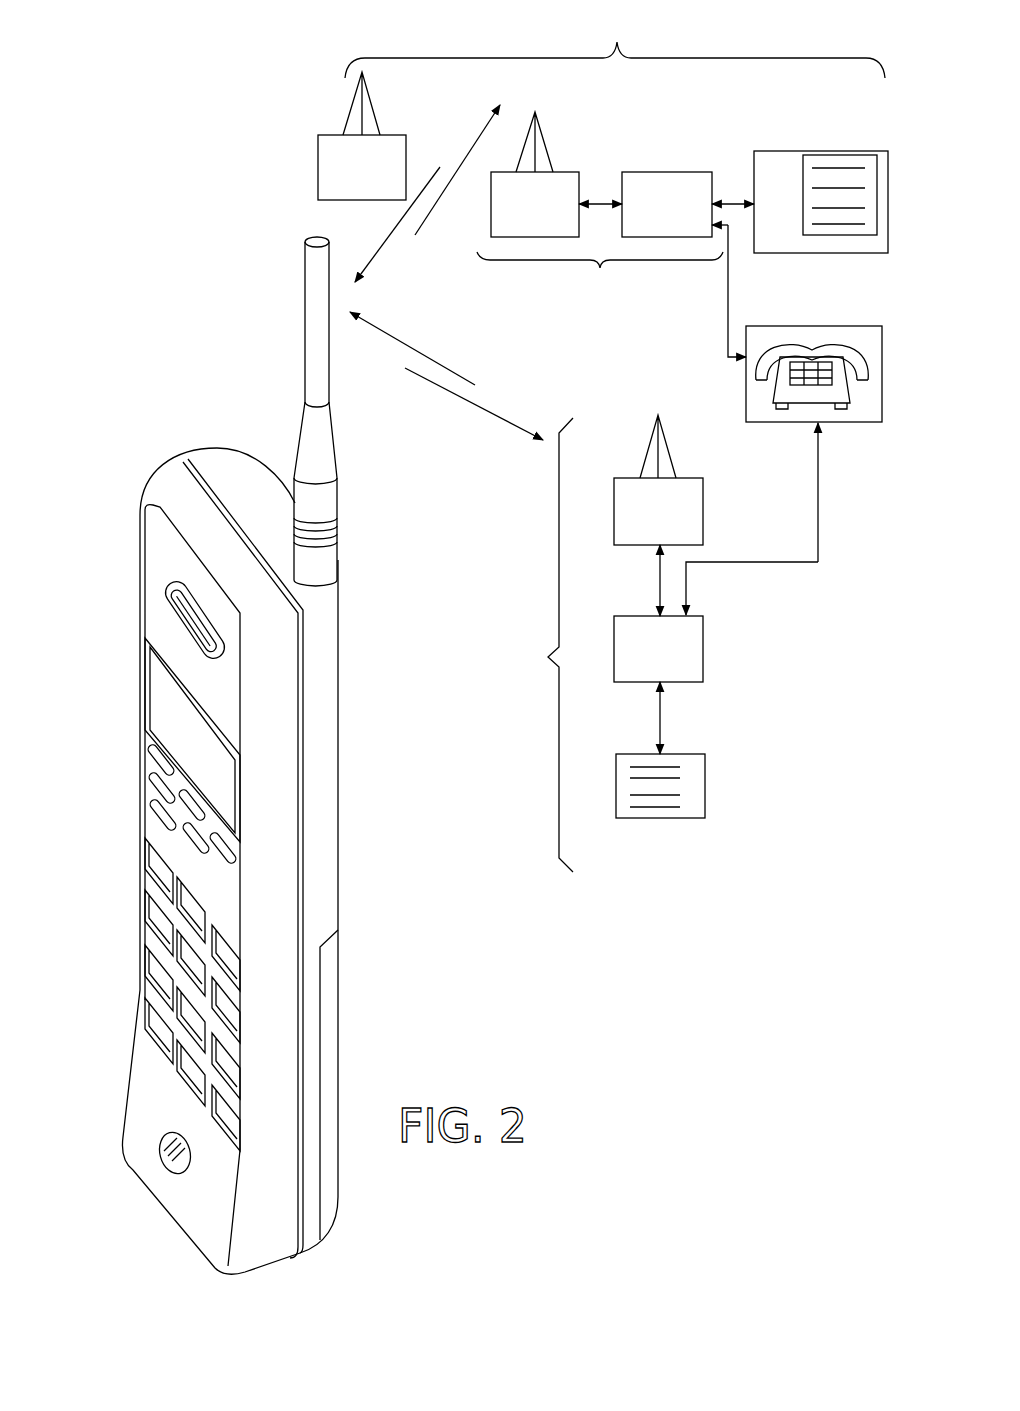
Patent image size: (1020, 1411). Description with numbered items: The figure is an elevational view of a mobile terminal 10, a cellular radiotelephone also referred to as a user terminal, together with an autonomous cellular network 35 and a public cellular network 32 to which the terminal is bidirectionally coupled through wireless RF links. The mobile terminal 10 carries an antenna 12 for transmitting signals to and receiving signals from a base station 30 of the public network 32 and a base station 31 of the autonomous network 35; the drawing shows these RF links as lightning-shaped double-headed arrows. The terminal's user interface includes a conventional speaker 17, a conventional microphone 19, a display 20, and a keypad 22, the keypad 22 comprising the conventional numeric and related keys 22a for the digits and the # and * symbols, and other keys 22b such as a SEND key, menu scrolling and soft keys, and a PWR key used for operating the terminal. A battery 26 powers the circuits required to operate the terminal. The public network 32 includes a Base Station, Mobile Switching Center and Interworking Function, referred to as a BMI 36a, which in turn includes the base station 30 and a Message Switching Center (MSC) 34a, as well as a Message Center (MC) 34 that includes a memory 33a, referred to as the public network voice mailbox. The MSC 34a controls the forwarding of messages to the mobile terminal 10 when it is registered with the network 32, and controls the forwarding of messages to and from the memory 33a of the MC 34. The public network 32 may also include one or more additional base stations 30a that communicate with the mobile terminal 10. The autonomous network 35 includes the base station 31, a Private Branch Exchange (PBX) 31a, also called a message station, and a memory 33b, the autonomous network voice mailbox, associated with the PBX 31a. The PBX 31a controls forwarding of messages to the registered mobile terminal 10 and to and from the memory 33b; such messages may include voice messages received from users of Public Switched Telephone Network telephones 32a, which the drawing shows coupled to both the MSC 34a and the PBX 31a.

The mobile terminal 10 is at (120, 452).
The antenna 12 is at (308, 307).
The speaker 17 is at (183, 601).
The microphone 19 is at (168, 1160).
The display 20 is at (160, 701).
The keypad 22 is at (170, 947).
The numeric and related keys 22a is at (146, 995).
The other keys 22b is at (156, 813).
The battery 26 is at (335, 1062).
The base station 30 is at (566, 172).
The additional base station 30a is at (390, 134).
The base station 31 is at (690, 478).
The Private Branch Exchange (PBX) 31a is at (703, 658).
The public cellular network 32 is at (615, 45).
The Public Switched Telephone Network (PSTN) telephone 32a is at (843, 350).
The memory 33a is at (820, 155).
The memory or storage device 33b is at (705, 790).
The Message Center (MC) 34 is at (754, 172).
The Message Switching Center (MSC) 34a is at (650, 171).
The autonomous cellular network 35 is at (485, 645).
The BMI 36a is at (600, 276).